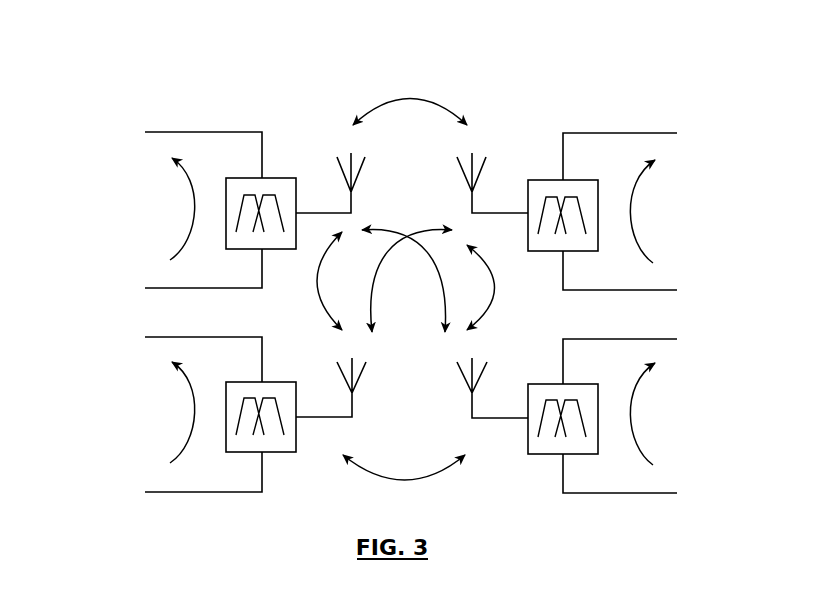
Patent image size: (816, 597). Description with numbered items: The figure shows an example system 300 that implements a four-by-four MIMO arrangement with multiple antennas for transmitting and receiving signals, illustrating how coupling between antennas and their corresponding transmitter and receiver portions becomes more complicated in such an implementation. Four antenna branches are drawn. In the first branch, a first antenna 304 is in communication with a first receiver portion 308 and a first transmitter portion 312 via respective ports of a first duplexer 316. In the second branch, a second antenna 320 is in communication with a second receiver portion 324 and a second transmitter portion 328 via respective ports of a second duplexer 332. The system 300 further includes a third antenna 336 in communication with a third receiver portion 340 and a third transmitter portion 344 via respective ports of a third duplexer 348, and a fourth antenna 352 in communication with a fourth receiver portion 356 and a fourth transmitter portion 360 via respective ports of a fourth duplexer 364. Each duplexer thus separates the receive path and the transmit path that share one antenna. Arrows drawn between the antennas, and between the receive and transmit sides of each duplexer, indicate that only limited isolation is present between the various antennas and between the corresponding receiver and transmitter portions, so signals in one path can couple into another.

The system 300 is at (206, 54).
The first antenna 304 is at (336, 164).
The first receiver portion 308 is at (183, 131).
The first transmitter portion 312 is at (225, 289).
The first duplexer 316 is at (228, 249).
The second antenna 320 is at (485, 172).
The second receiver portion 324 is at (623, 133).
The second transmitter portion 328 is at (613, 289).
The second duplexer 332 is at (540, 251).
The third antenna 336 is at (360, 372).
The third receiver portion 340 is at (197, 336).
The third transmitter portion 344 is at (210, 493).
The third duplexer 348 is at (283, 452).
The fourth antenna 352 is at (485, 374).
The fourth receiver portion 356 is at (635, 338).
The fourth transmitter portion 360 is at (643, 494).
The fourth duplexer 364 is at (530, 454).